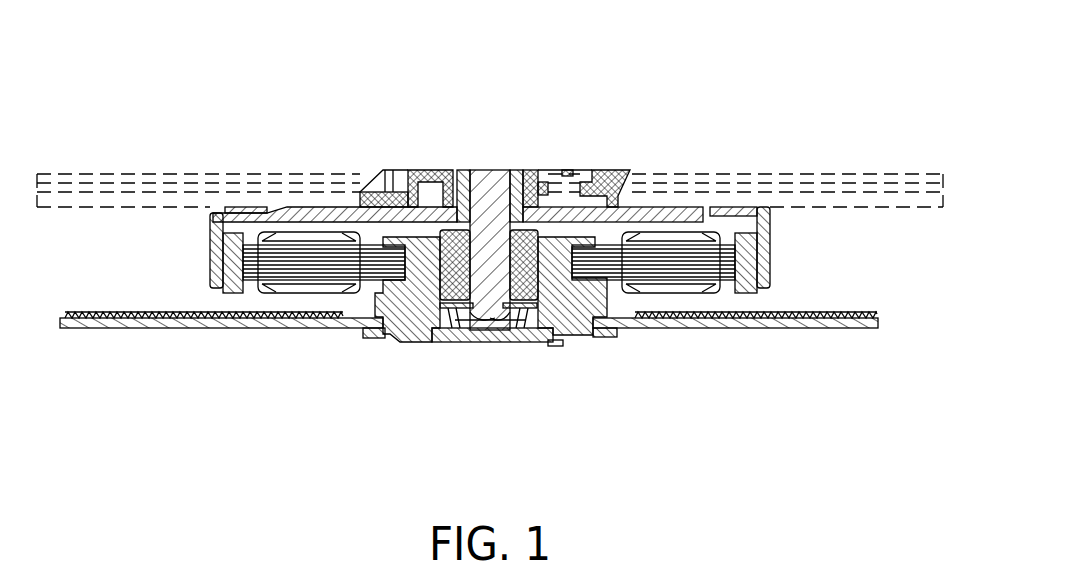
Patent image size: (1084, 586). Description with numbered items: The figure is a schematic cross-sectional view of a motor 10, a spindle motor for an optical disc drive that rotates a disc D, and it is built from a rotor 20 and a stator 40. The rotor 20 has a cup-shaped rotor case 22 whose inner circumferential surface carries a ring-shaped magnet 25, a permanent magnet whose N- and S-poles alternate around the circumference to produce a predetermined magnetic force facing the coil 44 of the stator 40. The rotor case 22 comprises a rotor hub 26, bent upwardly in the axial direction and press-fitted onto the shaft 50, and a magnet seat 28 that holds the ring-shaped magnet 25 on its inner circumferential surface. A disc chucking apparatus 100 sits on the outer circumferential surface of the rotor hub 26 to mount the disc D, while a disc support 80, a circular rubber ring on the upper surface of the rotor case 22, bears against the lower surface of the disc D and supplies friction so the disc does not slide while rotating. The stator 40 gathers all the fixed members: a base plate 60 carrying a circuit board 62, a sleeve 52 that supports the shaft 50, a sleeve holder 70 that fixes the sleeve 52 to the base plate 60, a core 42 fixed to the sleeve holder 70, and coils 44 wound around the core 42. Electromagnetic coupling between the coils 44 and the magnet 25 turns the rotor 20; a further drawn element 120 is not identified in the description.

The motor 10 is at (740, 48).
The disc D is at (772, 156).
The rotor 20 is at (803, 252).
The rotor case 22 is at (305, 207).
The ring-shaped magnet 25 is at (760, 276).
The rotor hub 26 is at (521, 170).
The magnet seat 28 is at (768, 250).
The stator 40 is at (560, 367).
The core 42 is at (633, 335).
The coil 44 is at (675, 335).
The shaft 50 is at (486, 342).
The sleeve 52 is at (453, 342).
The base plate 60 is at (834, 328).
The circuit board 62 is at (850, 312).
The sleeve holder 70 is at (404, 338).
The disc support 80 is at (225, 208).
The disc chucking apparatus 100 is at (592, 152).
The clamp ring 120 is at (427, 170).